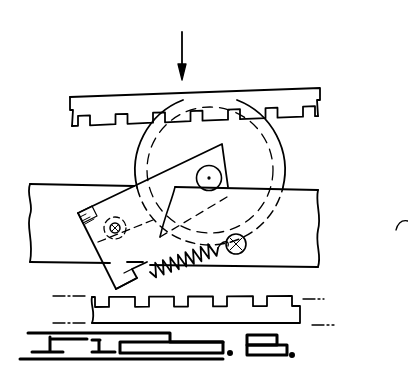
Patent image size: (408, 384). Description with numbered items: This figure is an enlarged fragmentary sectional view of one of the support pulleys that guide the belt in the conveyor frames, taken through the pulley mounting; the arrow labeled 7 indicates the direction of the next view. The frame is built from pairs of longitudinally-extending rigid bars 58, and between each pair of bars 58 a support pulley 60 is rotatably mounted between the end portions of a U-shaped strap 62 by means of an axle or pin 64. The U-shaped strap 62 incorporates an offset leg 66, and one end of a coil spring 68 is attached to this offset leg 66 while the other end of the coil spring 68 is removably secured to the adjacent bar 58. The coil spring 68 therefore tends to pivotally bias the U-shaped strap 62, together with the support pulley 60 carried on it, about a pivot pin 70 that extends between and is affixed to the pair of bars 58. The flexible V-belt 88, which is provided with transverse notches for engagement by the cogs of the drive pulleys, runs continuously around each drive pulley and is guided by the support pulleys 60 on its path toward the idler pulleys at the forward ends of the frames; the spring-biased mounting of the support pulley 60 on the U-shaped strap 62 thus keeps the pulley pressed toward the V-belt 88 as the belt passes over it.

The direction arrow of FIG. 7 view 7 is at (198, 50).
The flexible V-belt 88 is at (270, 91).
The support pulley 60 is at (277, 143).
The axle or pin 64 is at (210, 178).
The rigid bar 58 is at (297, 232).
The U-shaped strap 62 is at (182, 166).
The pivot pin 70 is at (110, 220).
The offset leg 66 is at (110, 274).
The coil spring 68 is at (150, 277).